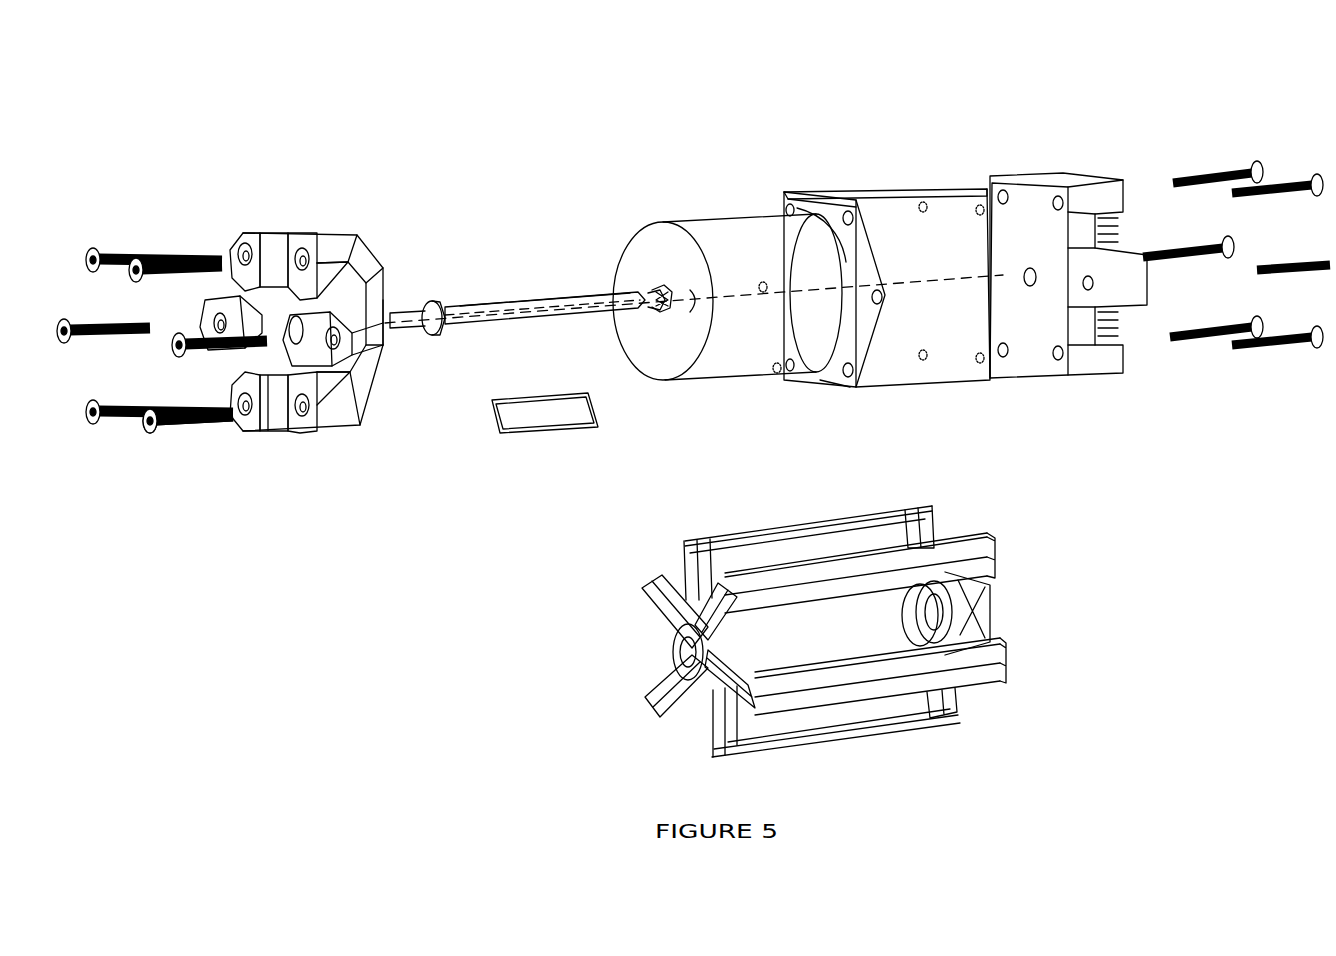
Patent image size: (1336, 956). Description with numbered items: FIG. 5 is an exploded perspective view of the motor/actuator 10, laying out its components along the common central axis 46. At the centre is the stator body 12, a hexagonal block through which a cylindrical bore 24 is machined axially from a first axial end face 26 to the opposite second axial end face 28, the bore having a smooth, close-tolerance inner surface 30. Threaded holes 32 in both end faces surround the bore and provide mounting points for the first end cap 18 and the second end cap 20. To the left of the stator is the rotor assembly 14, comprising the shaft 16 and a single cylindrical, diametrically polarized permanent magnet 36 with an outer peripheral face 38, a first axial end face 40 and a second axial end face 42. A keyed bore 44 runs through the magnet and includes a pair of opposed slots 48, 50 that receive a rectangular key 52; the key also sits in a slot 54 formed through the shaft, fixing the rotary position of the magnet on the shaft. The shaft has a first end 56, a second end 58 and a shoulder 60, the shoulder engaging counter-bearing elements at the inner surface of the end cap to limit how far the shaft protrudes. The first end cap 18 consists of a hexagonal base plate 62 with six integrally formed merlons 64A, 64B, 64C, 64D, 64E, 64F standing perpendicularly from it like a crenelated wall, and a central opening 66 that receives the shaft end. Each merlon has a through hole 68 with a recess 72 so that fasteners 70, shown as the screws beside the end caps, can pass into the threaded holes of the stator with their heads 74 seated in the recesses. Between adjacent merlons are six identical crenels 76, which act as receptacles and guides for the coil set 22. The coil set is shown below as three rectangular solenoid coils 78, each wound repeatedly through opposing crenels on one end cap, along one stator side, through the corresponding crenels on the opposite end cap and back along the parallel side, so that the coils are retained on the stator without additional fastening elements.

The motor/actuator 10 is at (1232, 638).
The stator body 12 is at (799, 256).
The rotor assembly 14 is at (520, 238).
The shaft 16 is at (520, 293).
The first end cap 18 is at (254, 300).
The second end cap 20 is at (1036, 133).
The coil set 22 is at (707, 639).
The cylindrical bore 24 is at (800, 220).
The first axial end face 26 is at (830, 200).
The second axial end face 28 is at (955, 186).
The inner surface 30 is at (852, 265).
The threaded holes 32 is at (857, 375).
The permanent magnet 36 is at (725, 335).
The outer peripheral face 38 is at (737, 353).
The first axial end face 40 is at (669, 360).
The second axial end face 42 is at (877, 297).
The keyed bore 44 is at (655, 270).
The central axis 46 is at (514, 305).
The slot 48 is at (657, 293).
The slot 50 is at (670, 357).
The rectangular key 52 is at (552, 415).
The slot 54 is at (530, 318).
The first end 56 is at (393, 318).
The second end 58 is at (612, 298).
The shoulder 60 is at (437, 337).
The base plate 62 is at (367, 430).
The merlon 64A is at (323, 427).
The merlon 64B is at (378, 342).
The merlon 64C is at (330, 243).
The merlon 64D is at (253, 238).
The merlon 64E is at (208, 299).
The merlon 64F is at (245, 425).
The central opening 66 is at (274, 395).
The through hole 68 is at (303, 250).
The fasteners 70 is at (127, 428).
The recesses 72 is at (273, 233).
The heads 74 is at (150, 435).
The crenels 76 is at (365, 420).
The solenoid coils 78 is at (655, 598).